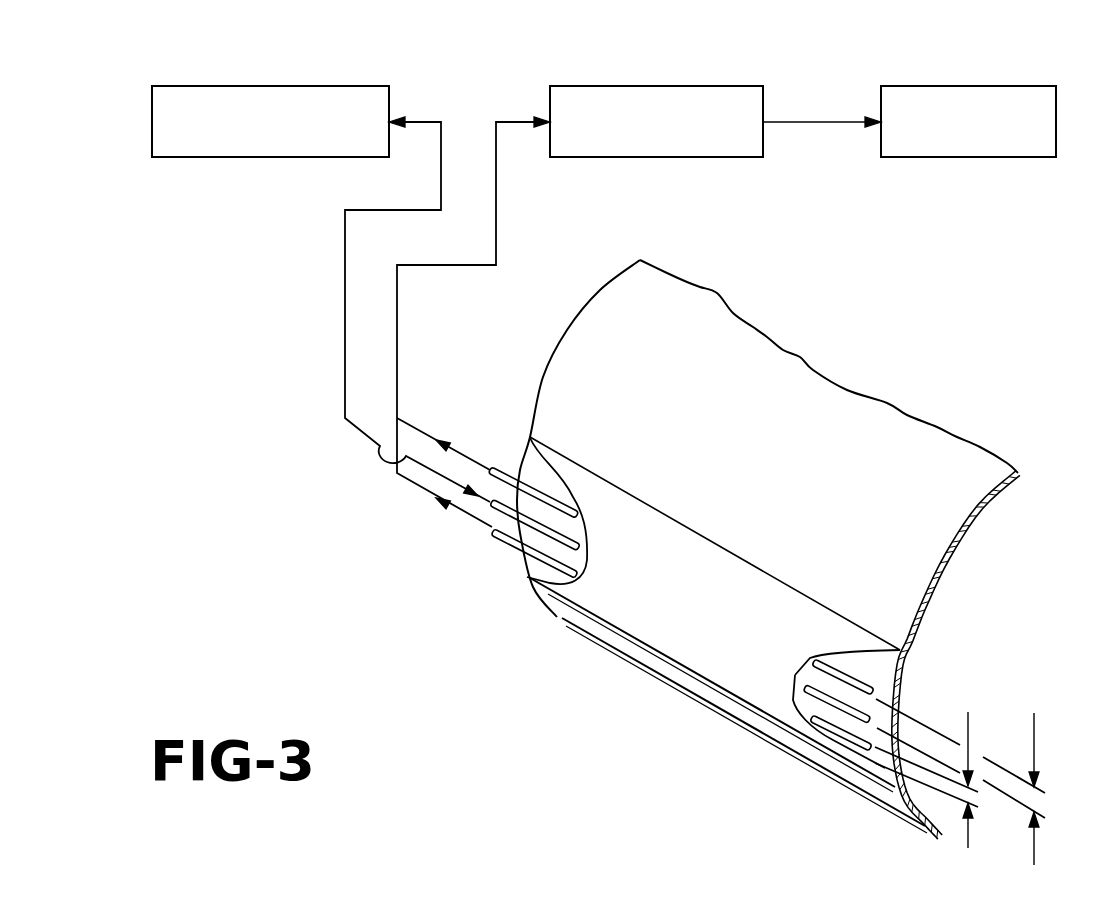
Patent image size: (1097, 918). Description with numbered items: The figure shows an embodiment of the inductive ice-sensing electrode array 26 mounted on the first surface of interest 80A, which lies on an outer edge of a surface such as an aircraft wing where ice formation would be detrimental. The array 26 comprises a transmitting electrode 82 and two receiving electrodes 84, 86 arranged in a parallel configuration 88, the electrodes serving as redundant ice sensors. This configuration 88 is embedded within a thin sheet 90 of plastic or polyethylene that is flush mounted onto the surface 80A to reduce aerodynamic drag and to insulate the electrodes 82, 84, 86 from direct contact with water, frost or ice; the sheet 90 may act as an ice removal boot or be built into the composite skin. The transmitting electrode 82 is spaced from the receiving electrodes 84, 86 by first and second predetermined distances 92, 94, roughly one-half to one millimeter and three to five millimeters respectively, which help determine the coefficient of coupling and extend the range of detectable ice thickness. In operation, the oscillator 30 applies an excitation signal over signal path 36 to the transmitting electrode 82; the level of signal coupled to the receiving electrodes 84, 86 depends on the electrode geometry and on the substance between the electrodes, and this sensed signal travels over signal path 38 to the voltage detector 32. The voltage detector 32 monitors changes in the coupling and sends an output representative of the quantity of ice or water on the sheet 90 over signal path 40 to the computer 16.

The computer 16 is at (968, 86).
The inductive ice-sensing electrode array 26 is at (672, 654).
The oscillator 30 is at (252, 86).
The voltage detector 32 is at (595, 86).
The signal path 36 is at (345, 263).
The signal path 38 is at (495, 220).
The signal path 40 is at (812, 121).
The first surface of interest 80A is at (915, 463).
The transmitting electrode 82 is at (533, 553).
The receiving electrode 84 is at (537, 489).
The receiving electrode 86 is at (500, 535).
The parallel configuration 88 is at (793, 640).
The thin sheet 90 is at (870, 643).
The first predetermined distance 92 is at (1035, 733).
The second predetermined distance 94 is at (972, 733).